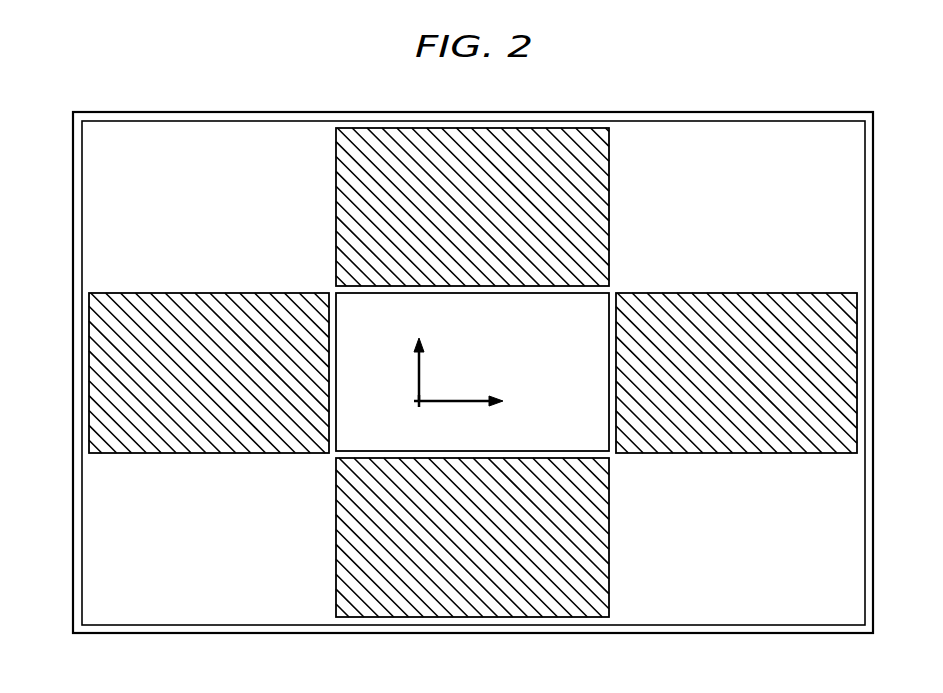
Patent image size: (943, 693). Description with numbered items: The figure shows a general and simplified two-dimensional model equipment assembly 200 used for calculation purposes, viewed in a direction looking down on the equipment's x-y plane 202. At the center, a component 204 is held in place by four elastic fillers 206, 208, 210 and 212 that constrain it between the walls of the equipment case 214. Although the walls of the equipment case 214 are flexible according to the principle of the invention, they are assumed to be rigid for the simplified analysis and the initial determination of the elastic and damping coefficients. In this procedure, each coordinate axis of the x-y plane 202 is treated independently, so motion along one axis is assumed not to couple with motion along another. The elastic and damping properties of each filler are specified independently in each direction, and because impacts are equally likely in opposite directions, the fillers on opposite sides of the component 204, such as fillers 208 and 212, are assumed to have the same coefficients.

The model equipment assembly 200 is at (674, 93).
The x-y plane 202 is at (454, 369).
The component 204 is at (599, 327).
The elastic filler 206 is at (611, 536).
The elastic filler 208 is at (190, 293).
The elastic filler 210 is at (612, 204).
The elastic filler 212 is at (759, 292).
The equipment case 214 is at (73, 567).